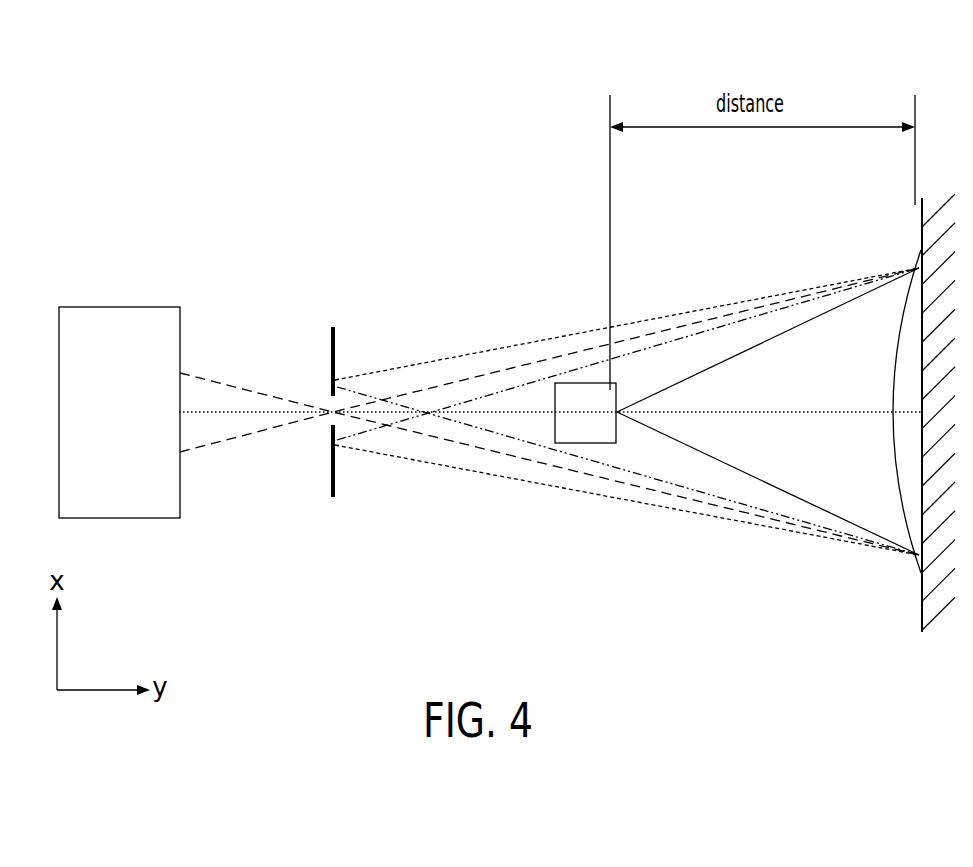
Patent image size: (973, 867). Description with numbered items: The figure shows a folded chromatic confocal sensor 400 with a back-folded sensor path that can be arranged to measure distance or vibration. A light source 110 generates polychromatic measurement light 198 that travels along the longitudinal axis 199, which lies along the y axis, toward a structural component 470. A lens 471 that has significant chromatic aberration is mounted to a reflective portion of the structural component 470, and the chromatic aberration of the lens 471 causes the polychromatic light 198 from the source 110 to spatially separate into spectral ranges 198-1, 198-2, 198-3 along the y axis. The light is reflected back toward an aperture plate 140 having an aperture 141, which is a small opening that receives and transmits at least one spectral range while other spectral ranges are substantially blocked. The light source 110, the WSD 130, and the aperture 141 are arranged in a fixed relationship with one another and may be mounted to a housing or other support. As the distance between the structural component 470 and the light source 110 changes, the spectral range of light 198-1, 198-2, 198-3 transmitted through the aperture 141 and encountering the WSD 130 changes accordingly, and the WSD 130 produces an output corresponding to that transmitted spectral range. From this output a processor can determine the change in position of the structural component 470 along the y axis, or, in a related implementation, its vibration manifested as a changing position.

The sensor 400 is at (433, 82).
The WSD 130 is at (120, 318).
The aperture plate 140 is at (333, 327).
The aperture 141 is at (327, 423).
The spectral range 198-1 is at (408, 364).
The spectral range 198-2 is at (242, 385).
The spectral range 198-3 is at (500, 434).
The light source 110 is at (582, 390).
The polychromatic measurement light 198 is at (855, 313).
The longitudinal axis 199 is at (830, 413).
The structural component 470 is at (921, 228).
The lens 471 is at (900, 390).